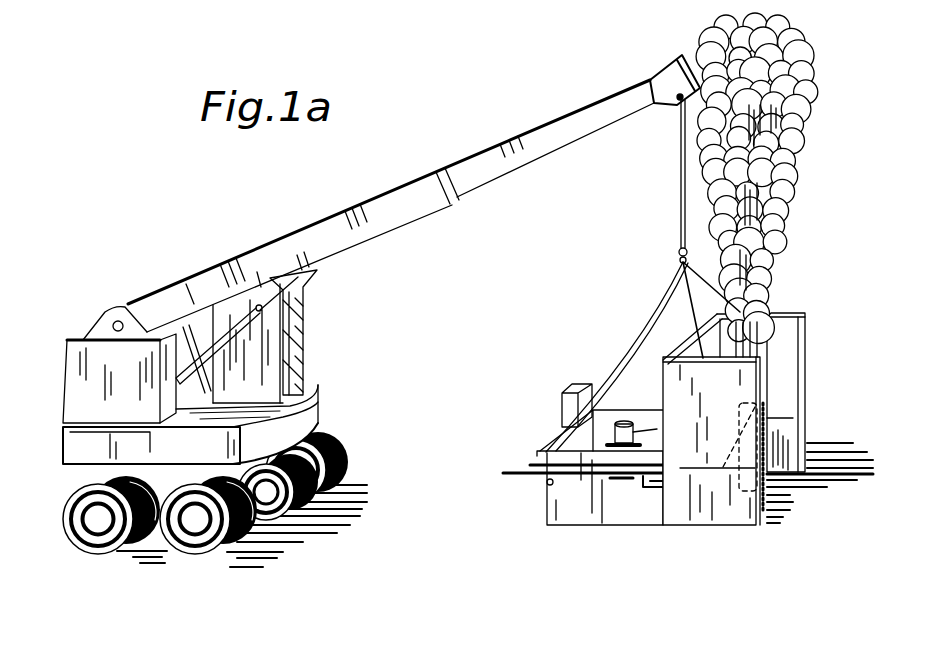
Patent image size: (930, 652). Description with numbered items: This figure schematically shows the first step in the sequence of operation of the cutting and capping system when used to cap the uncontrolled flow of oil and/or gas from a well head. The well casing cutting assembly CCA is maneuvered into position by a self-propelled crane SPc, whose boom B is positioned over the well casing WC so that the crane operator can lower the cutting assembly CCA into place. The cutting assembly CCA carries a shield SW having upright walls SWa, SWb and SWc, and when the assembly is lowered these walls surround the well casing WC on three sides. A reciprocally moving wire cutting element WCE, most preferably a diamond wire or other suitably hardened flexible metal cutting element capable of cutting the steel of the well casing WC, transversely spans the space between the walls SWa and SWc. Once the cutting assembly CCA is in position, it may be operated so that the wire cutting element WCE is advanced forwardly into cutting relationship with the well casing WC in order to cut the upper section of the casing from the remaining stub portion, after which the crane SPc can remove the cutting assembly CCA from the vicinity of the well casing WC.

The boom B is at (587, 103).
The self-propelled crane SPc is at (340, 307).
The upright wall of the shield SWb is at (690, 338).
The upright wall of the shield SWc is at (793, 313).
The upright wall of the shield SWa is at (740, 378).
The well casing WC is at (805, 479).
The shield SW is at (647, 516).
The wire cutting element WCE is at (677, 487).
The well casing cutting assembly CCA is at (633, 475).